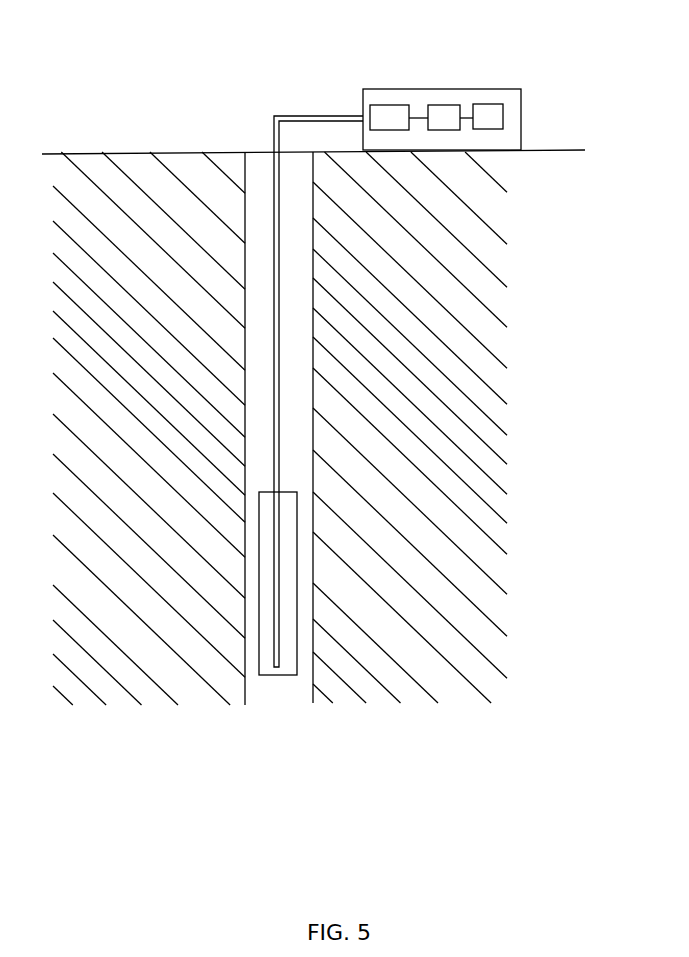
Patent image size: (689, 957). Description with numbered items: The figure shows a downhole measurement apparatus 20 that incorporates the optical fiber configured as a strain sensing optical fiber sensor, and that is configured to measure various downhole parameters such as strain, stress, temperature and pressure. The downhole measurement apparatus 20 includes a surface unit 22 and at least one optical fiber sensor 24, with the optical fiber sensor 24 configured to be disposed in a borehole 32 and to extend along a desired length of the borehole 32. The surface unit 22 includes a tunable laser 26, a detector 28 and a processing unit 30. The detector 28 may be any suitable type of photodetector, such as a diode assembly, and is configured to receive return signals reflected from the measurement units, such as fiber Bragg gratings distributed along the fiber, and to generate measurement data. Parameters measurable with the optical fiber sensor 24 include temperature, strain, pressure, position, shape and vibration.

The downhole measurement apparatus 20 is at (212, 49).
The surface unit 22 is at (363, 87).
The optical fiber sensor 24 is at (273, 129).
The tunable laser 26 is at (397, 110).
The detector 28 is at (445, 112).
The processing unit 30 is at (490, 108).
The borehole 32 is at (268, 662).